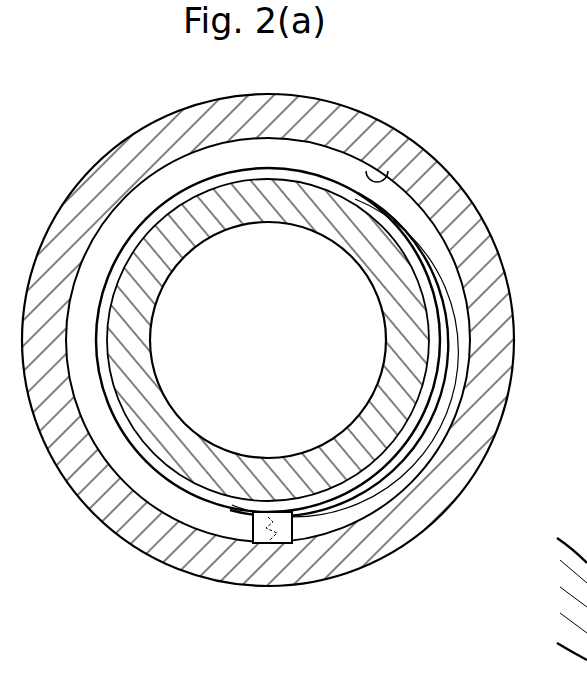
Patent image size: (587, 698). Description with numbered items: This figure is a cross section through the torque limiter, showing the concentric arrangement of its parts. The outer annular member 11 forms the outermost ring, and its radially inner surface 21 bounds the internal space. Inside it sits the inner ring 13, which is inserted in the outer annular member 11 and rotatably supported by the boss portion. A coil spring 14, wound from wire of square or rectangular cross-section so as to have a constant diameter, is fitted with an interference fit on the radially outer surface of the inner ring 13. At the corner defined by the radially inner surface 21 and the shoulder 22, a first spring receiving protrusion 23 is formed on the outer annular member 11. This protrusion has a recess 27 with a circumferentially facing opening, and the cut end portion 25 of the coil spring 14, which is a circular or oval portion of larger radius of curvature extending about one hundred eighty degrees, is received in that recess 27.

The outer annular member 11 is at (323, 118).
The shoulder 22 is at (133, 210).
The coil spring 14 is at (193, 197).
The inner ring 13 is at (390, 263).
The cut end portion 25 is at (338, 510).
The radially inner surface 21 is at (387, 182).
The first spring receiving protrusion 23 is at (254, 541).
The recess 27 is at (280, 550).